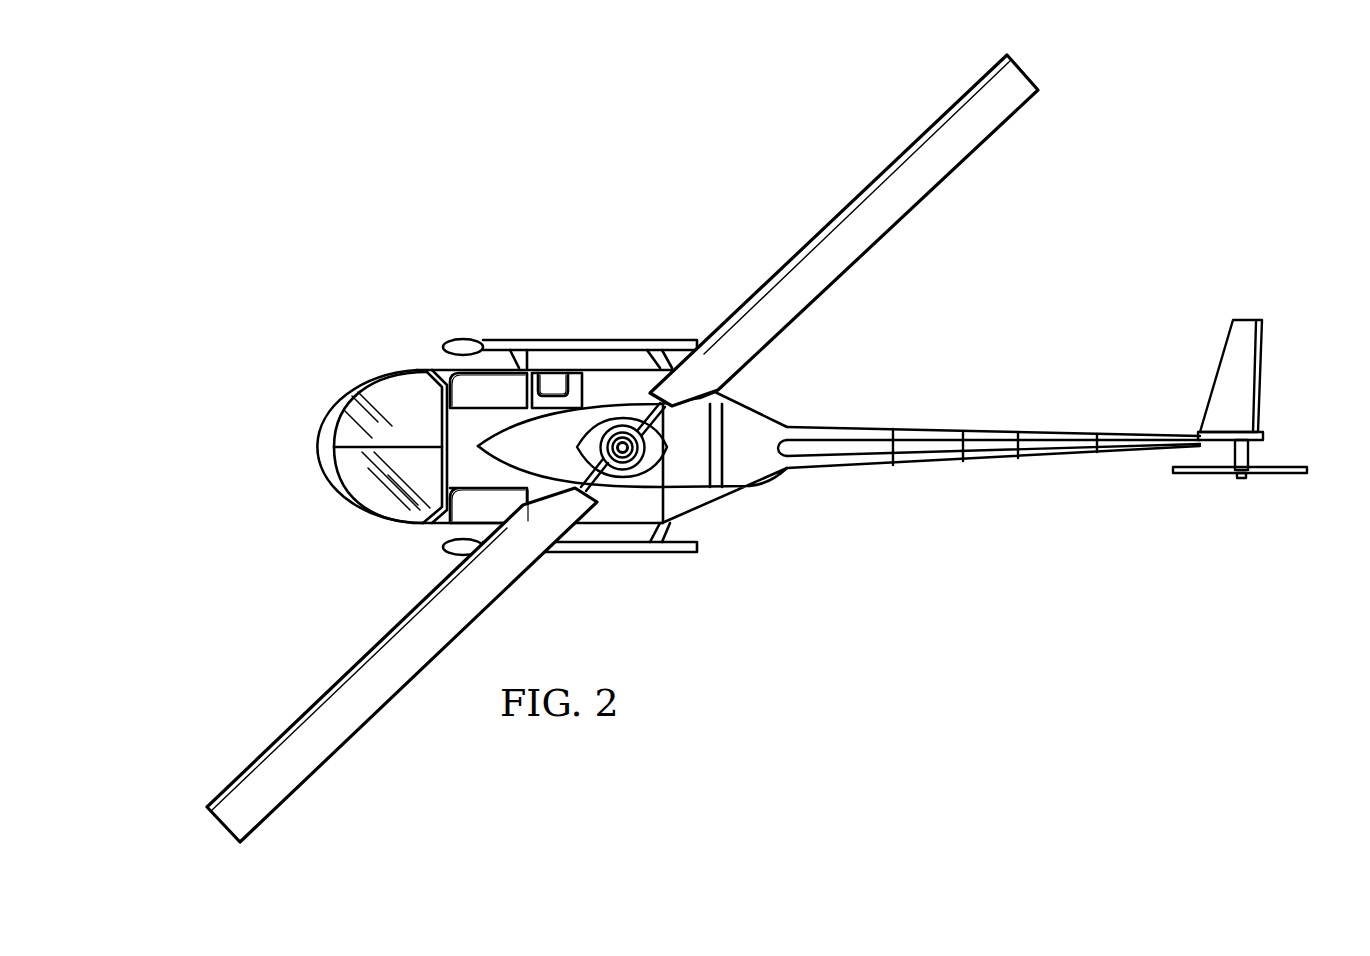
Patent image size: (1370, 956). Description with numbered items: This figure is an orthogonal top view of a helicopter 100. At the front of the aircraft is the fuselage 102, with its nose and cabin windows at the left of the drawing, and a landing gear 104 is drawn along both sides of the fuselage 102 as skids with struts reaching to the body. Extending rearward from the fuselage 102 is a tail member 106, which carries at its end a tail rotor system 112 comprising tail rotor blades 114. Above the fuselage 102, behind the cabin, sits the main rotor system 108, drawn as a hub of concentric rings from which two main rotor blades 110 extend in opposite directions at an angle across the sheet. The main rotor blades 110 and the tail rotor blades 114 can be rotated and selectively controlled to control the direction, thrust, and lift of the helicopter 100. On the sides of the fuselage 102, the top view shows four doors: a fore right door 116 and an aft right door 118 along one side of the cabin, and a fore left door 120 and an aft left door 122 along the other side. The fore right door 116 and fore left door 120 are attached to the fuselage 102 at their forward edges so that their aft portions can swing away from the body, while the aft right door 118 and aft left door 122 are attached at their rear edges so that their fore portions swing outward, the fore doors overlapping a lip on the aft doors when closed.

The helicopter 100 is at (470, 142).
The fuselage 102 is at (463, 440).
The landing gear 104 is at (632, 555).
The tail member 106 is at (993, 430).
The main rotor system 108 is at (612, 413).
The main rotor blades 110 is at (888, 218).
The tail rotor system 112 is at (1240, 498).
The tail rotor blades 114 is at (1192, 476).
The fore right door 116 is at (480, 402).
The aft right door 118 is at (553, 402).
The fore left door 120 is at (488, 512).
The aft left door 122 is at (540, 495).